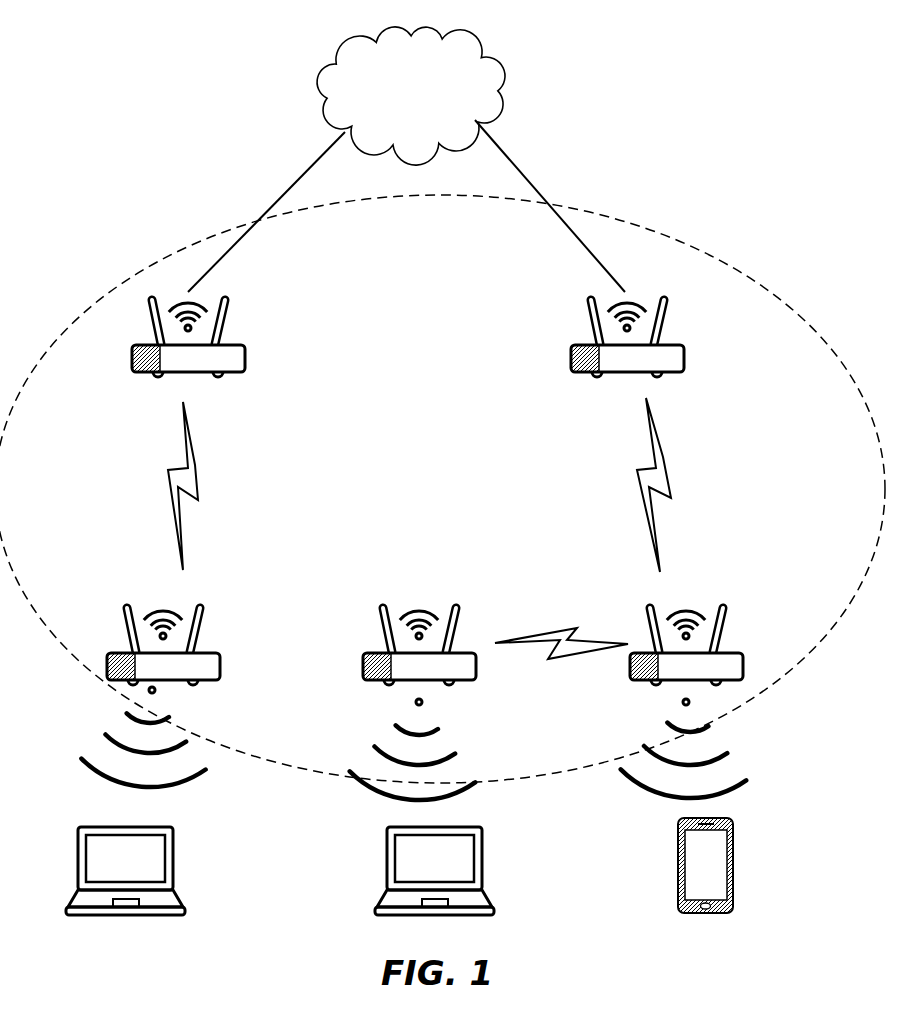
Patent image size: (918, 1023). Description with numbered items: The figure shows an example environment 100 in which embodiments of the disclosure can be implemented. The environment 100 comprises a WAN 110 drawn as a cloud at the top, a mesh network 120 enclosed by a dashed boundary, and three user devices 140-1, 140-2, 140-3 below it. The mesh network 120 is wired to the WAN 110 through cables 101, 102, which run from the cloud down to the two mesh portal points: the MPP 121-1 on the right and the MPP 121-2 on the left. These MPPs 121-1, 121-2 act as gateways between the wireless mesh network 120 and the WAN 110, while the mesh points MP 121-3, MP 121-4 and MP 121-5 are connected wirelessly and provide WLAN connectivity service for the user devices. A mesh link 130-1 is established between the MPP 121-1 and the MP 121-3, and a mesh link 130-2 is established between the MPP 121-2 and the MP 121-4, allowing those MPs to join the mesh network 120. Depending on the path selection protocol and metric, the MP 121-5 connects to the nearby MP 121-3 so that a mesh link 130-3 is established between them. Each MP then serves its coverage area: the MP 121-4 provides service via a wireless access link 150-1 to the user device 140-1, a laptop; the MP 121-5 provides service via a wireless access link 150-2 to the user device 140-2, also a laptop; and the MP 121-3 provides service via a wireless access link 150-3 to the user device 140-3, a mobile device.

The environment 100 is at (124, 77).
The WAN 110 is at (464, 33).
The cable 101 is at (532, 172).
The cable 102 is at (300, 174).
The mesh network 120 is at (765, 290).
The MPP 121-1 is at (670, 300).
The MPP 121-2 is at (230, 300).
The MP 121-3 is at (728, 608).
The MP 121-4 is at (205, 608).
The MP 121-5 is at (461, 608).
The mesh link 130-1 is at (664, 470).
The mesh link 130-2 is at (195, 470).
The mesh link 130-3 is at (556, 632).
The user device 140-1 is at (160, 828).
The user device 140-2 is at (472, 828).
The user device 140-3 is at (718, 824).
The wireless access link 150-1 is at (175, 748).
The wireless access link 150-2 is at (466, 755).
The wireless access link 150-3 is at (730, 755).